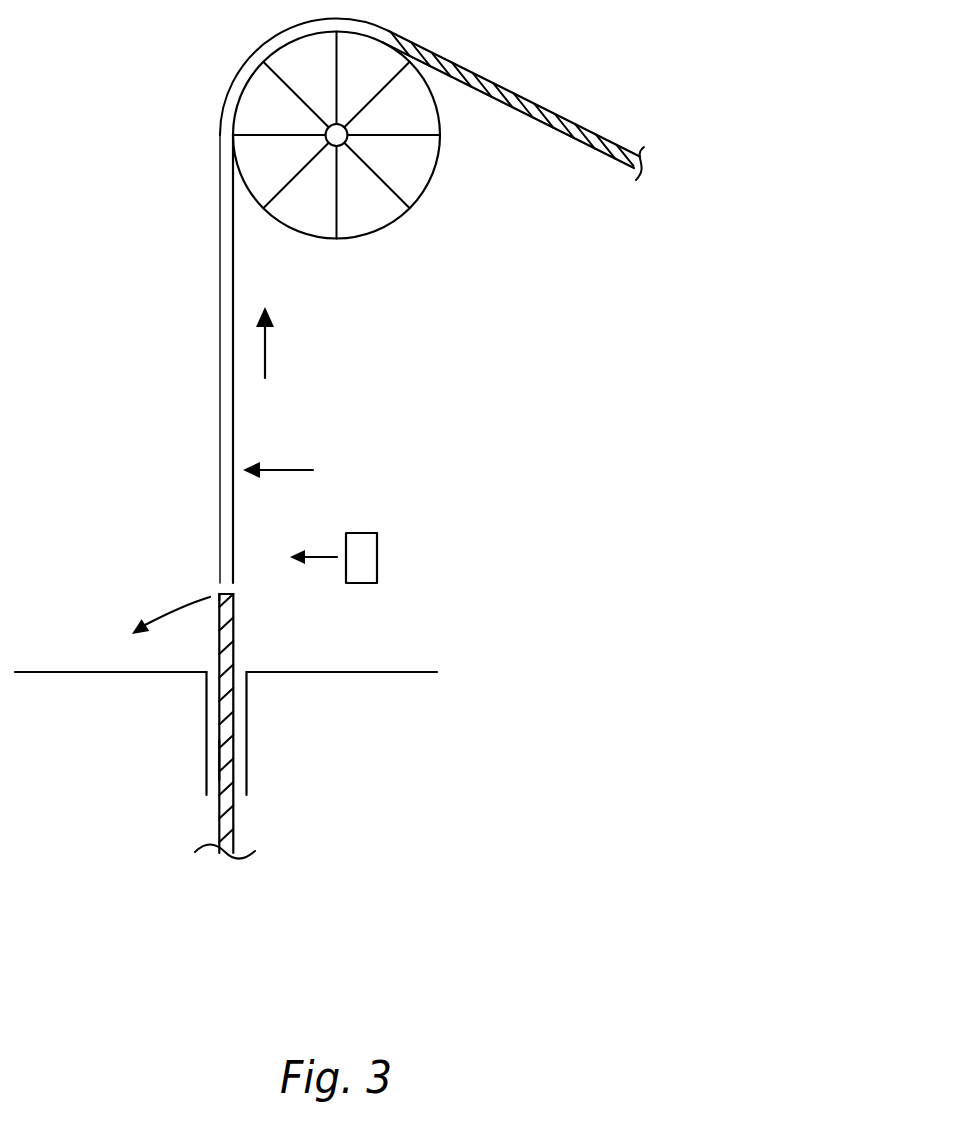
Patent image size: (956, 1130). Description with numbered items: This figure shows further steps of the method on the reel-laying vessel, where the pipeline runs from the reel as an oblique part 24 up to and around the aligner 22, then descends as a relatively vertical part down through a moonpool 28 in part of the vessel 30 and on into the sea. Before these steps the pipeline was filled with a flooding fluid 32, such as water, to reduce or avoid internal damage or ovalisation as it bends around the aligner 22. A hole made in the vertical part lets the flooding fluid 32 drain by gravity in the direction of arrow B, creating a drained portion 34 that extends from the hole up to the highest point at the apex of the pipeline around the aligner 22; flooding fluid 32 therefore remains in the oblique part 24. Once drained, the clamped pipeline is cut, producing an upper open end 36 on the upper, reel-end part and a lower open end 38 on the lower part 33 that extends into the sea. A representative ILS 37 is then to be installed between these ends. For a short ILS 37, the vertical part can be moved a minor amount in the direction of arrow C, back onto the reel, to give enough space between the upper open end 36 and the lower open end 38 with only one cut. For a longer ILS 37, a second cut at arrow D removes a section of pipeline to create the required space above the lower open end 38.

The aligner 22 is at (388, 225).
The oblique part 24 is at (537, 106).
The moonpool 28 is at (247, 748).
The vessel 30 is at (410, 672).
The flooding fluid 32 is at (569, 136).
The lower part 33 is at (225, 758).
The drained portion 34 is at (222, 302).
The upper open end 36 is at (233, 588).
The ILS 37 is at (367, 552).
The lower open end 38 is at (228, 592).
The arrow B is at (158, 626).
The arrow C is at (265, 363).
The arrow D is at (297, 471).